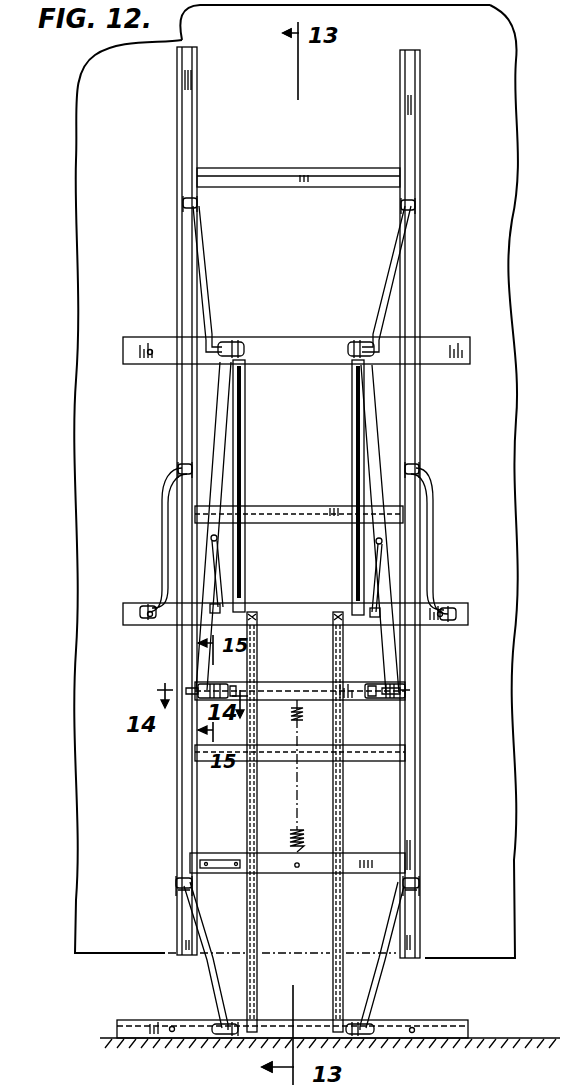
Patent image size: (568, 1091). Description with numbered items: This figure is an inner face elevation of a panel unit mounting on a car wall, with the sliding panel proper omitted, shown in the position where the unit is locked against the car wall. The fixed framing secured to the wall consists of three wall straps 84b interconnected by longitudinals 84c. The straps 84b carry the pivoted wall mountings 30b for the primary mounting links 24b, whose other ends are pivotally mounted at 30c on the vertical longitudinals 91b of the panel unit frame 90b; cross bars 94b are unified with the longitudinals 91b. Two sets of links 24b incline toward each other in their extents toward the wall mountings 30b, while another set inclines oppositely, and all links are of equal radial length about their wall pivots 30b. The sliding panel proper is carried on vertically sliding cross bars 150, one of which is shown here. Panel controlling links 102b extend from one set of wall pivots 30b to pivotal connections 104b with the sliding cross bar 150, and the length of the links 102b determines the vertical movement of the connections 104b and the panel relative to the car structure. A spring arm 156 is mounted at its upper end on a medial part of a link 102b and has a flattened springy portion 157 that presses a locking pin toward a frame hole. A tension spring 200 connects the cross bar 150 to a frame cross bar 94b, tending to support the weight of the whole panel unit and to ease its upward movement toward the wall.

The primary mounting link 24b is at (212, 310).
The pivoted wall mounting 30b is at (234, 344).
The pivotal mounting 30c is at (200, 202).
The wall strap 84b is at (331, 353).
The longitudinal 84c is at (332, 468).
The panel unit frame 90b is at (415, 288).
The vertical longitudinal 91b is at (181, 414).
The cross bar 94b is at (327, 183).
The panel controlling link 102b is at (222, 478).
The pivotal connection 104b is at (232, 682).
The vertically sliding cross bar 150 is at (268, 693).
The spring arm 156 is at (222, 586).
The flattened springy portion 157 is at (218, 538).
The tension spring 200 is at (316, 778).